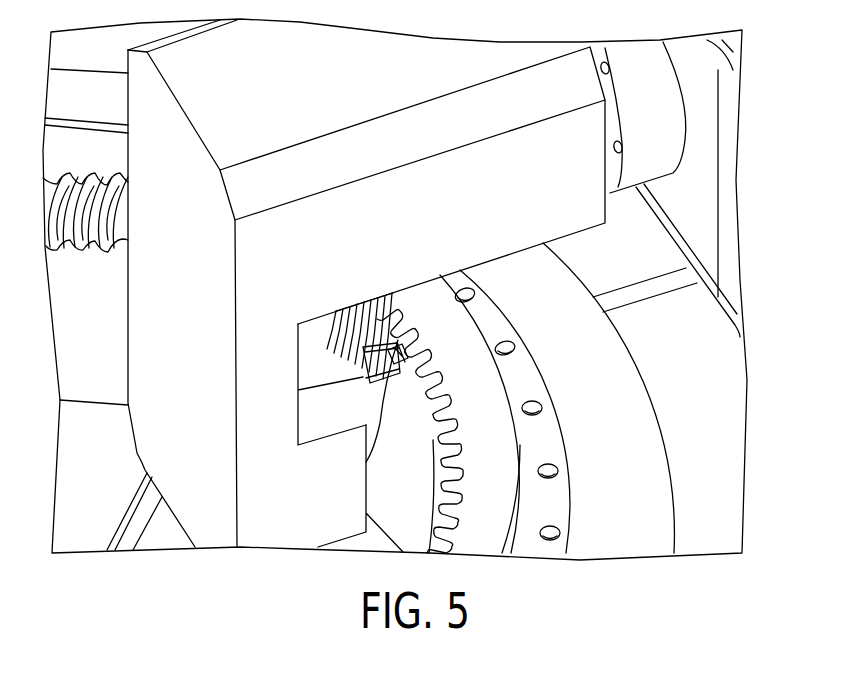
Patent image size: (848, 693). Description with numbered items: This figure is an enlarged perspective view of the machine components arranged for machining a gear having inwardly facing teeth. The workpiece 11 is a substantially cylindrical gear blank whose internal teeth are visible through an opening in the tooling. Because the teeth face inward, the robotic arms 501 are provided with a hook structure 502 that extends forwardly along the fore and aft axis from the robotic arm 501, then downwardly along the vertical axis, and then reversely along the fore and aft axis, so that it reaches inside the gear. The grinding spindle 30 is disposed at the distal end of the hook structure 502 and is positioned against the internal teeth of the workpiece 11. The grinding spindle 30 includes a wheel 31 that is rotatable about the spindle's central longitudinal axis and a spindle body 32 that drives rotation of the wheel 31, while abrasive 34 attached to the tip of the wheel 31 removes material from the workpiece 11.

The workpiece 11 is at (495, 487).
The grinding spindle 30 is at (340, 489).
The wheel 31 is at (404, 347).
The spindle body 32 is at (363, 391).
The abrasive 34 is at (384, 432).
The robotic arms 501 is at (712, 192).
The hook structure 502 is at (313, 262).